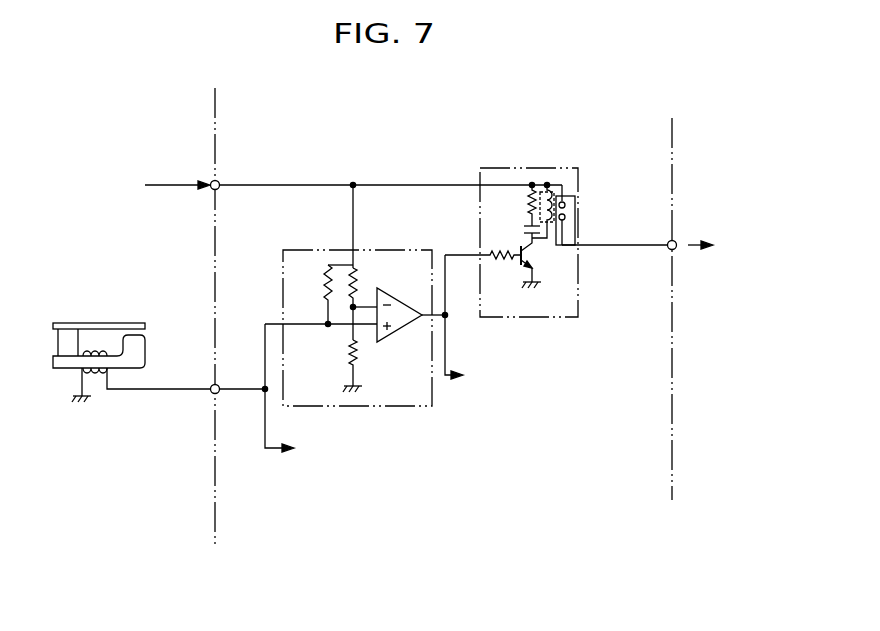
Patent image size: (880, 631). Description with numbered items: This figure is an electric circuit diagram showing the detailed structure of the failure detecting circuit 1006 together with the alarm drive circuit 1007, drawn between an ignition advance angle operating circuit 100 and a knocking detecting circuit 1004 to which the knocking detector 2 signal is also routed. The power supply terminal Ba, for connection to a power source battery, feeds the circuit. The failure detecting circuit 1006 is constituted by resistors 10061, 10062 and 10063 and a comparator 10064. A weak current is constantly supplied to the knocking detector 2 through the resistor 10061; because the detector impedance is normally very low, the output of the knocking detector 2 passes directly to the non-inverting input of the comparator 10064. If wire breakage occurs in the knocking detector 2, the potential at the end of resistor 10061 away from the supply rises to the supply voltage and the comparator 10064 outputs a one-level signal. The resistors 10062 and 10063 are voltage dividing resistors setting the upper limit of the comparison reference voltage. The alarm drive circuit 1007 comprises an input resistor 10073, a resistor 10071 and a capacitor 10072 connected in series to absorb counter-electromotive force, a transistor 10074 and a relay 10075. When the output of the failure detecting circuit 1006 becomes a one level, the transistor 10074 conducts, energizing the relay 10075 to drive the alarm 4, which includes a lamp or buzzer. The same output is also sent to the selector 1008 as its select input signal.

The knocking detector 2 is at (60, 366).
The alarm 4 is at (688, 258).
The ignition advance angle operating circuit 100 is at (230, 518).
The power supply terminal Ba is at (211, 189).
The knocking detecting circuit 1004 is at (405, 400).
The failure detecting circuit 1006 is at (355, 295).
The resistor 10061 is at (322, 278).
The resistor 10062 is at (386, 299).
The resistor 10063 is at (345, 352).
The comparator 10064 is at (403, 334).
The alarm drive circuit 1007 is at (546, 243).
The resistor 10071 is at (537, 190).
The capacitor 10072 is at (553, 192).
The input resistor 10073 is at (500, 260).
The transistor 10074 is at (538, 256).
The relay 10075 is at (576, 233).
The selector 1008 is at (479, 320).